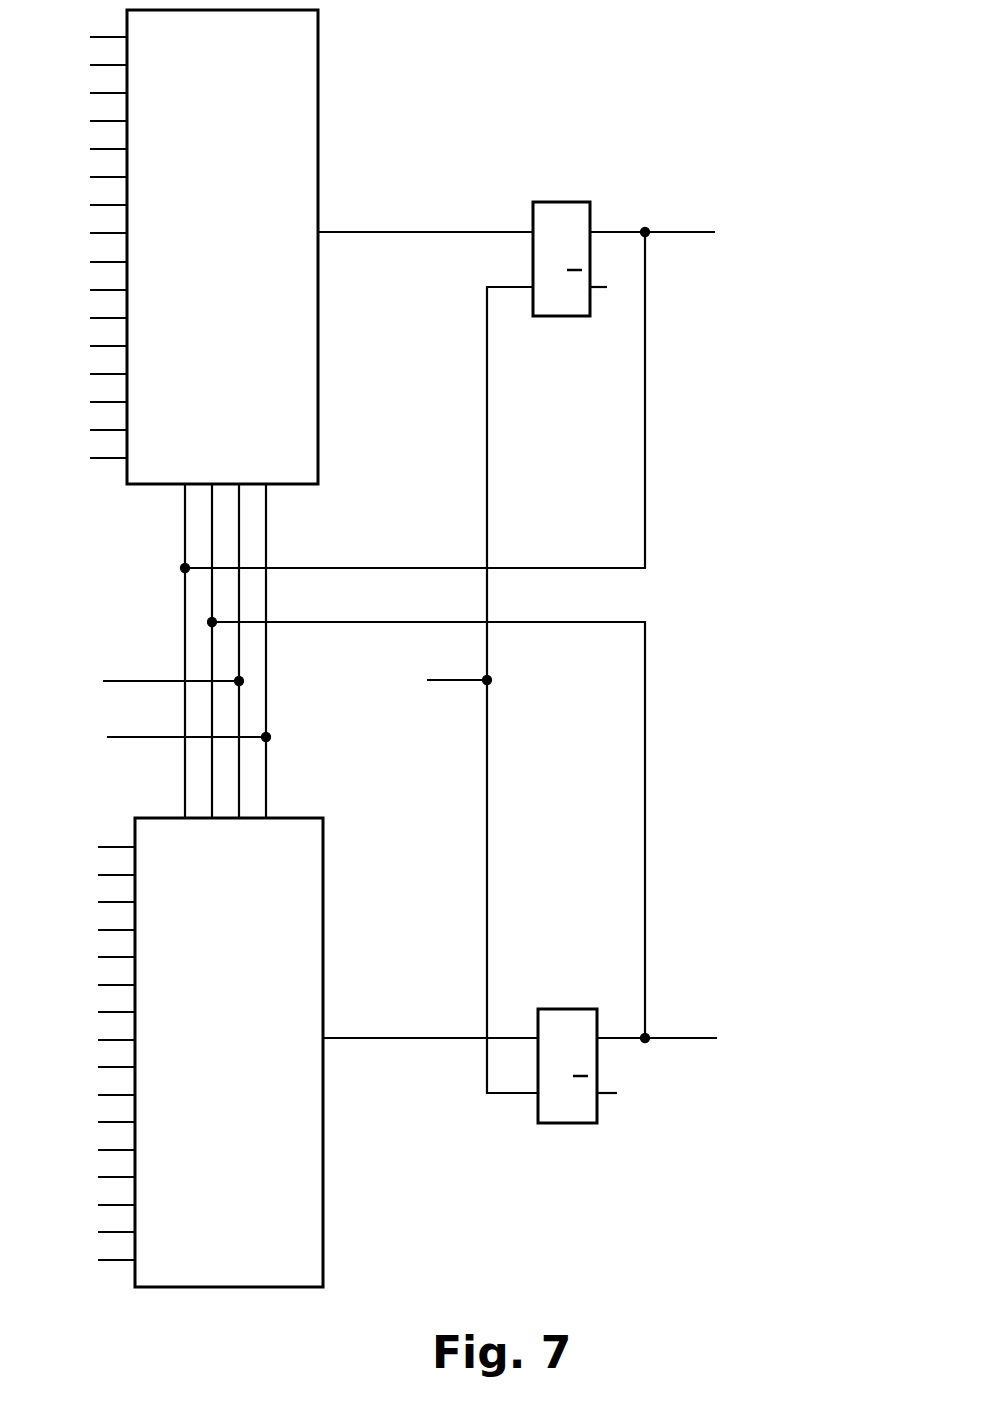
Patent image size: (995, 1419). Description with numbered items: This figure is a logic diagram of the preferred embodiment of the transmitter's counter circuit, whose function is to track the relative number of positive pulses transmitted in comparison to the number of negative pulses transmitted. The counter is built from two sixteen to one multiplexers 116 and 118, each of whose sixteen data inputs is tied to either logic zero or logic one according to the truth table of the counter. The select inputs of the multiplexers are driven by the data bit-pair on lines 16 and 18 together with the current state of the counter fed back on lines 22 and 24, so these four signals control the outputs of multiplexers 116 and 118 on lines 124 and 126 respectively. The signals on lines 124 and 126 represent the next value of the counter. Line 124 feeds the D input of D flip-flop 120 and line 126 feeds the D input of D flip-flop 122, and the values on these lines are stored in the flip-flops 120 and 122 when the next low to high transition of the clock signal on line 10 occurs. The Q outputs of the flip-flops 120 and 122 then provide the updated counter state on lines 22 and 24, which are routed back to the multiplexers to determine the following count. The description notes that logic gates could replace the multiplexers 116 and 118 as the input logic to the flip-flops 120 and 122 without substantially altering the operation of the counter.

The 16 to 1 multiplexer 116 is at (318, 340).
The 16 to 1 multiplexer 118 is at (323, 905).
The D flip-flop 120 is at (565, 317).
The D flip-flop 122 is at (584, 1124).
The line 124 is at (492, 232).
The line 126 is at (437, 1040).
The line 16 is at (145, 681).
The line 18 is at (148, 737).
The line 10 is at (455, 681).
The line 22 is at (680, 233).
The line 24 is at (680, 1040).